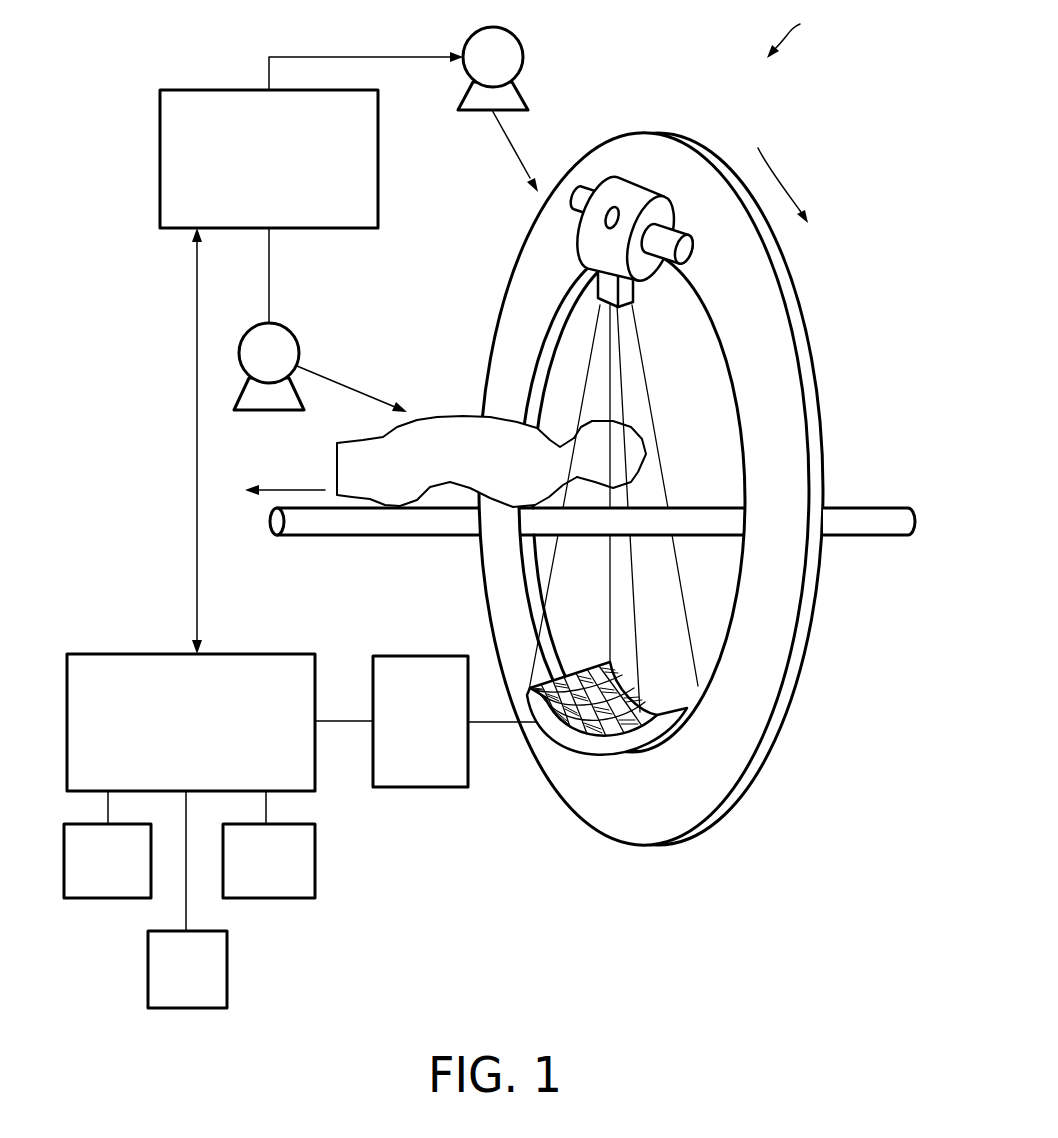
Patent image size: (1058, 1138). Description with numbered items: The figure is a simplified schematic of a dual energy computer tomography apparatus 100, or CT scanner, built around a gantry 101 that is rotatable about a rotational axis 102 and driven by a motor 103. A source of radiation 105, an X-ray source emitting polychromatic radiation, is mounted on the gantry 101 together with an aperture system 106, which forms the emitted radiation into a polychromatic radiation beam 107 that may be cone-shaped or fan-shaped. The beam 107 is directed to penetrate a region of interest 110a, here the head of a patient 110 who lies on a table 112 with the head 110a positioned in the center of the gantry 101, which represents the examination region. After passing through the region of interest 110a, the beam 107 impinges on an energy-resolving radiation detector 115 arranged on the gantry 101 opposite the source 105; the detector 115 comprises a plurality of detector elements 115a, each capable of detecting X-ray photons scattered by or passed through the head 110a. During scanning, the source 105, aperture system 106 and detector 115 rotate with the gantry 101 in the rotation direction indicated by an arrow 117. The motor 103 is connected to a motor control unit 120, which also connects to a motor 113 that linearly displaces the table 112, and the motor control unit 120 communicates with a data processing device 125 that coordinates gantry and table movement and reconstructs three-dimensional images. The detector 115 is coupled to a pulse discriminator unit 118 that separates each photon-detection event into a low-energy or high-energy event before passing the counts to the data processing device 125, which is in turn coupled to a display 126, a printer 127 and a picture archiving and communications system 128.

The computer tomography apparatus 100 is at (805, 36).
The gantry 101 is at (593, 489).
The rotational axis 102 is at (296, 490).
The motor 103 is at (523, 57).
The source of radiation 105 is at (634, 190).
The aperture system 106 is at (600, 280).
The polychromatic radiation beam 107 is at (650, 398).
The patient 110 is at (440, 428).
The region of interest 110a is at (647, 455).
The table 112 is at (890, 508).
The motor 113 is at (299, 348).
The radiation detector 115 is at (596, 711).
The detector elements 115a is at (573, 668).
The arrow 117 is at (785, 175).
The pulse discriminator unit 118 is at (418, 656).
The motor control unit 120 is at (208, 90).
The data processing device 125 is at (243, 654).
The display 126 is at (100, 898).
The printer 127 is at (227, 968).
The picture archiving and communications system 128 is at (315, 860).